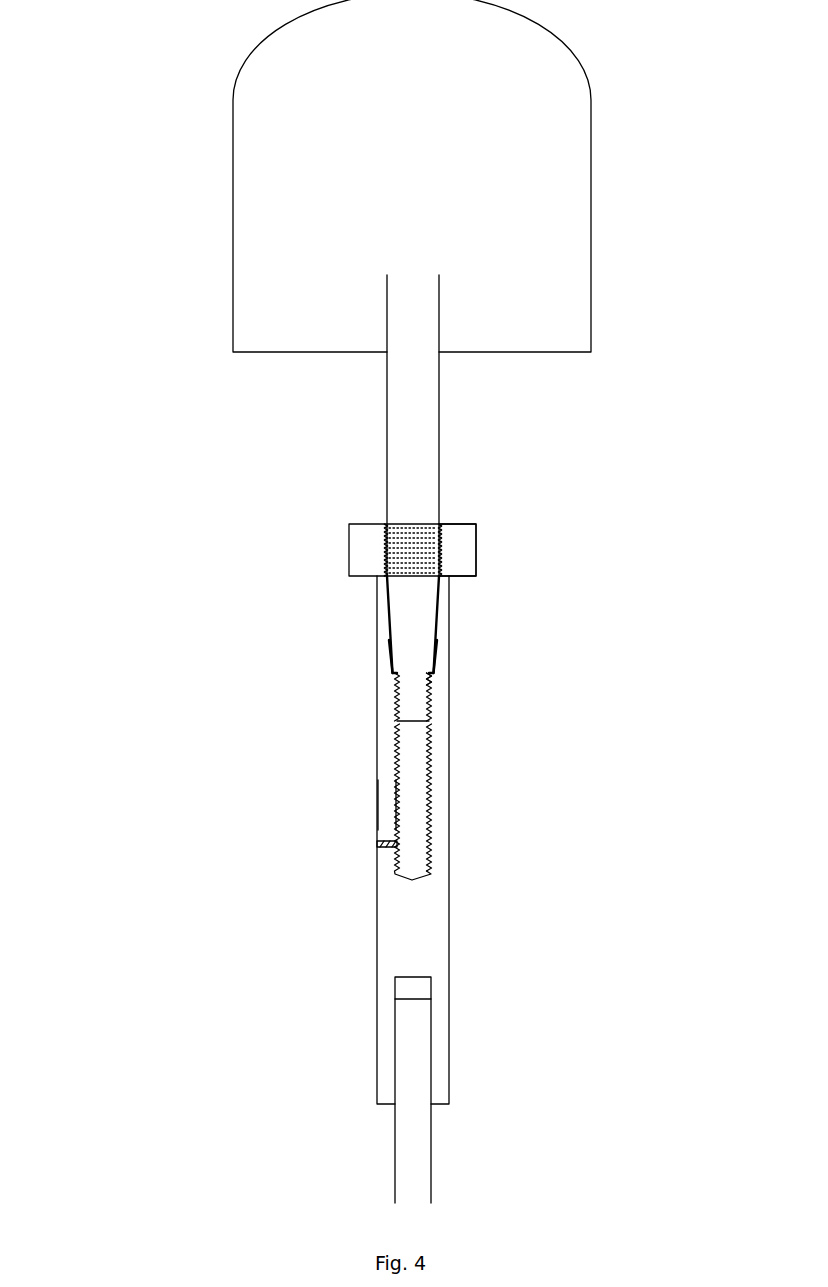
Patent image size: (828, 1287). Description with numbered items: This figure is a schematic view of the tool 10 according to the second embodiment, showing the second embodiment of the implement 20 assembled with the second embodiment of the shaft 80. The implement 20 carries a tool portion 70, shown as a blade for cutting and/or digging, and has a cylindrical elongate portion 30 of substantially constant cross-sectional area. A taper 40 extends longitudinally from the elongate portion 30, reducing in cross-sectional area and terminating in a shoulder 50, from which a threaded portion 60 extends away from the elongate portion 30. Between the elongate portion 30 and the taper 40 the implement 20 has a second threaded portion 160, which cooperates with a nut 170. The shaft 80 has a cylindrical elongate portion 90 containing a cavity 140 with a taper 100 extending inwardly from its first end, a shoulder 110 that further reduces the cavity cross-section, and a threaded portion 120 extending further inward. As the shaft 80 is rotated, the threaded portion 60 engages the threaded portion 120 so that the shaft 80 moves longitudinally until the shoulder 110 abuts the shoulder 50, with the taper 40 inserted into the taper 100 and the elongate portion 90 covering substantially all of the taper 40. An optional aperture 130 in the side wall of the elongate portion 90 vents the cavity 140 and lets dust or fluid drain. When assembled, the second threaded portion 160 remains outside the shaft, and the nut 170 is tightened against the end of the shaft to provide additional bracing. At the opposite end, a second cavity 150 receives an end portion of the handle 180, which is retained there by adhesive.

The tool 10 is at (178, 756).
The implement 20 is at (152, 420).
The elongate portion 30 is at (439, 448).
The taper 40 is at (423, 598).
The shoulder 50 is at (392, 665).
The threaded portion 60 is at (413, 700).
The tool portion 70 is at (572, 268).
The shaft 80 is at (490, 1052).
The elongate portion 90 is at (432, 935).
The taper 100 is at (438, 652).
The shoulder 110 is at (428, 680).
The threaded portion 120 is at (430, 795).
The aperture 130 is at (382, 843).
The cavity 140 is at (408, 806).
The second cavity 150 is at (408, 988).
The second threaded portion 160 is at (355, 543).
The nut 170 is at (460, 538).
The handle 180 is at (410, 1150).